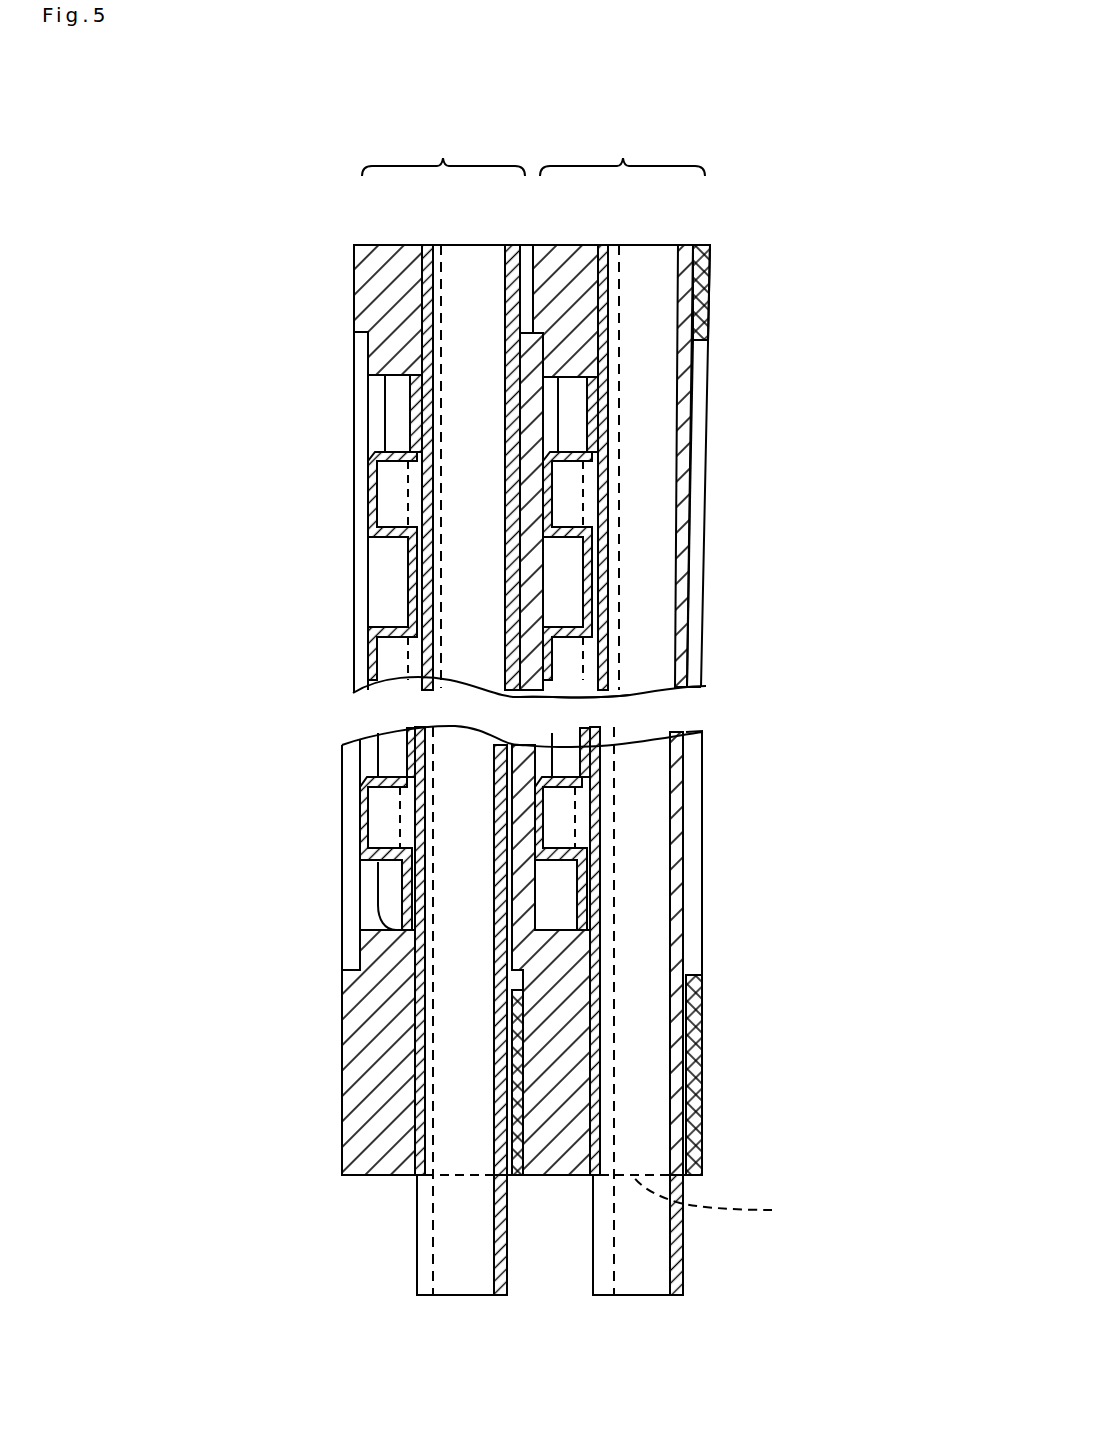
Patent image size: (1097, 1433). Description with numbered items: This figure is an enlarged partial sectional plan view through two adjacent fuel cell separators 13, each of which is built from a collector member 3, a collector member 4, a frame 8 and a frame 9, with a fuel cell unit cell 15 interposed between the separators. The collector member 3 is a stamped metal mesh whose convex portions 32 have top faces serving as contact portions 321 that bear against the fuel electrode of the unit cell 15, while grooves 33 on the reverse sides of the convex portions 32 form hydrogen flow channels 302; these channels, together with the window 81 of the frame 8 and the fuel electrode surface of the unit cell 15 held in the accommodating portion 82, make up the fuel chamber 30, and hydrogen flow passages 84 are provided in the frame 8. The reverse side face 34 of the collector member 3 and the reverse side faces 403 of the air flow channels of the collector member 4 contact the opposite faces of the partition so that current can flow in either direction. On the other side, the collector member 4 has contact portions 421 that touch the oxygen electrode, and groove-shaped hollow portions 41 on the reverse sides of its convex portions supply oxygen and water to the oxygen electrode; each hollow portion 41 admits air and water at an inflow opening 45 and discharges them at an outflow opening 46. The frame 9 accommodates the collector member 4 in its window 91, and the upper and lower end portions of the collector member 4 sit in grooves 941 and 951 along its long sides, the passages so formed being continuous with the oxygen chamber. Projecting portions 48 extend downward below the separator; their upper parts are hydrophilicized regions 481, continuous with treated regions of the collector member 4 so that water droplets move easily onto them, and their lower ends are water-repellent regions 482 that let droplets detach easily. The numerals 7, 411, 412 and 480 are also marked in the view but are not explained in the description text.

The fuel cell separator 13 is at (457, 155).
The pin contact tube 7 is at (427, 246).
The groove 941 is at (678, 283).
The inflow opening 45 is at (689, 244).
The hydrogen flow channel 302 is at (552, 396).
The window 91 is at (694, 345).
The hydrogen flow passage 84 is at (570, 428).
The upper inner wall 411 is at (690, 424).
The convex portion 32 is at (383, 458).
The groove 33 is at (388, 485).
The collector member 4 is at (697, 500).
The contact portion 321 is at (365, 502).
The reverse side face 34 is at (612, 572).
The fuel chamber 30 is at (379, 600).
The hollow portion 41 is at (648, 596).
The contact portion 421 is at (687, 660).
The reverse side face 403 is at (560, 648).
The lower inner wall 412 is at (630, 847).
The window 81 is at (378, 912).
The collector member 3 is at (592, 885).
The accommodating portion 82 is at (355, 972).
The fuel cell unit cell 15 is at (535, 958).
The groove 951 is at (688, 1108).
The frame 9 is at (697, 1150).
The outflow opening 46 is at (718, 1202).
The projecting portion 48 is at (675, 1244).
The hydrophilicized region 481 is at (412, 1253).
The water-repellent region 482 is at (412, 1295).
The frame 8 is at (540, 1178).
The tube tip end 480 is at (484, 1297).